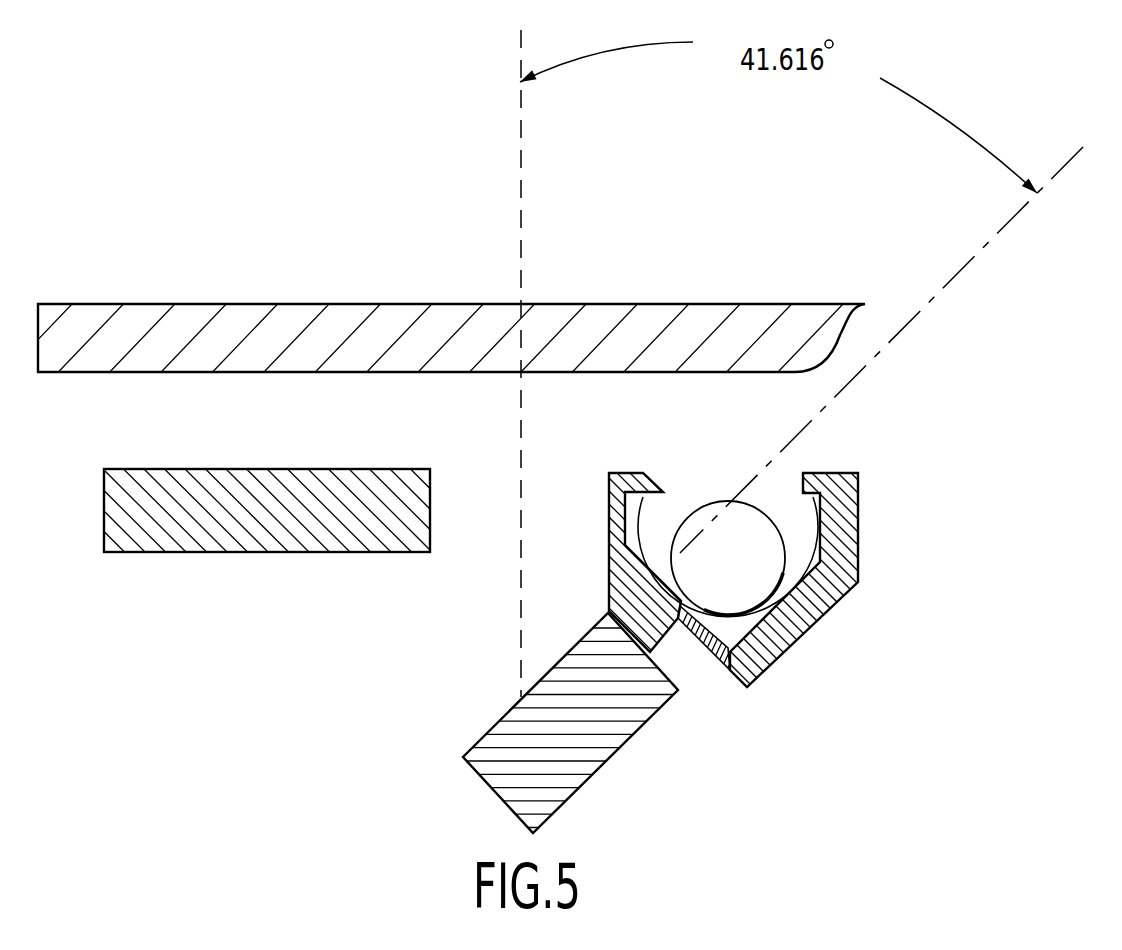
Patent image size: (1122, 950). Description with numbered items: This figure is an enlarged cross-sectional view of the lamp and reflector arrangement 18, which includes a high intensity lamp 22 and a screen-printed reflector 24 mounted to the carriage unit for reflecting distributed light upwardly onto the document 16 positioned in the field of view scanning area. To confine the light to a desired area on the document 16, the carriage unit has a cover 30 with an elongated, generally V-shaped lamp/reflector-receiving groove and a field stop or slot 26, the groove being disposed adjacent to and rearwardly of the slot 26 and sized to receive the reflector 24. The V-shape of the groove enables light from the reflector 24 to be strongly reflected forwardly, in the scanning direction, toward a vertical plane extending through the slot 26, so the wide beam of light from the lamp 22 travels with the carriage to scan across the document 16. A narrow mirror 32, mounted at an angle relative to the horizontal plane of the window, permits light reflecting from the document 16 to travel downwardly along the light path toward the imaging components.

The document 16 is at (450, 284).
The lamp and reflector arrangement 18 is at (881, 350).
The high intensity lamp 22 is at (729, 542).
The screen-printed reflector 24 is at (728, 525).
The field stop or slot 26 is at (469, 363).
The cover 30 is at (551, 579).
The narrow mirror 32 is at (531, 723).